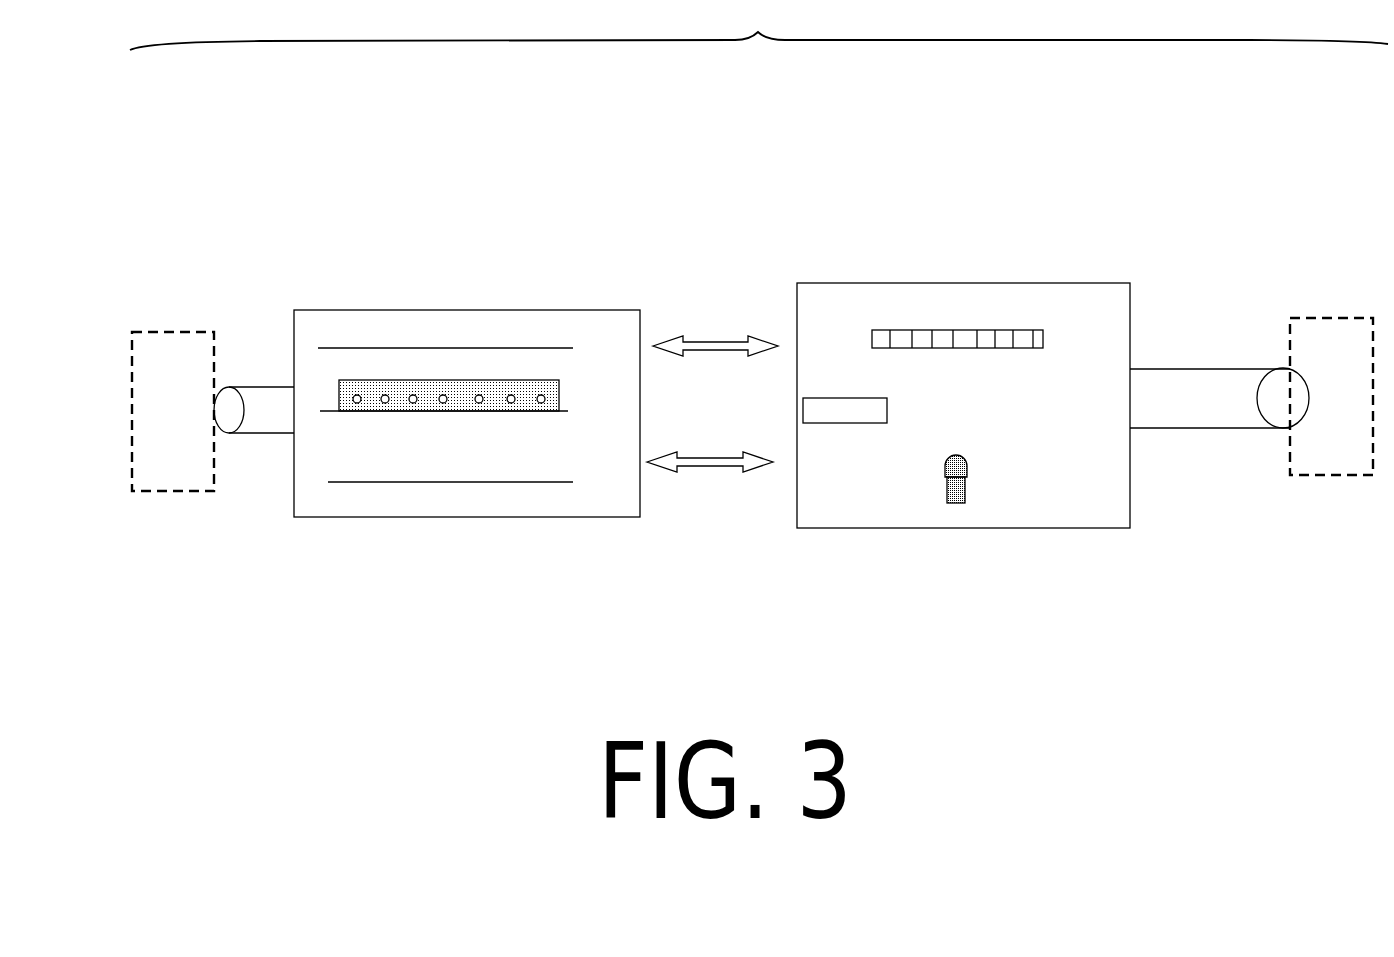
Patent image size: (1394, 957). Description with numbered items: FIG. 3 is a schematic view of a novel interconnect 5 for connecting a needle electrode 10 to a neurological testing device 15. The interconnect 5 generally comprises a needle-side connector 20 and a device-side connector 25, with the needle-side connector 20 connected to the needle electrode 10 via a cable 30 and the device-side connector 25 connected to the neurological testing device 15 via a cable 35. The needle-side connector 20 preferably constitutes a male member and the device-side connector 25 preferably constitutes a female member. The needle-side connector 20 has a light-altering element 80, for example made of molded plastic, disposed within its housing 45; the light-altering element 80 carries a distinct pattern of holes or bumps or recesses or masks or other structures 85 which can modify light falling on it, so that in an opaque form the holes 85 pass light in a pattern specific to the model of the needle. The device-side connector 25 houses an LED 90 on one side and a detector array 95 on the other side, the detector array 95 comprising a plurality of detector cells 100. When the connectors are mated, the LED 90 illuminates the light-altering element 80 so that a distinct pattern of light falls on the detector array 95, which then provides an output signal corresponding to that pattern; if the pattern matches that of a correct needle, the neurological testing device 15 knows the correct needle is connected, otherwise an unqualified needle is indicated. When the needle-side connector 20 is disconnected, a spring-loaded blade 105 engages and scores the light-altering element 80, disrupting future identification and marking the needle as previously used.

The interconnect 5 is at (759, 25).
The needle electrode 10 is at (137, 495).
The neurological testing device 15 is at (1340, 495).
The needle-side connector 20 is at (312, 518).
The device-side connector 25 is at (1117, 528).
The cable 30 is at (247, 433).
The cable 35 is at (1205, 432).
The housing 45 is at (560, 308).
The light-altering element 80 is at (485, 418).
The holes 85 is at (511, 403).
The LED 90 is at (962, 505).
The detector array 95 is at (1018, 350).
The detector cells 100 is at (922, 345).
The spring-loaded blade 105 is at (838, 425).